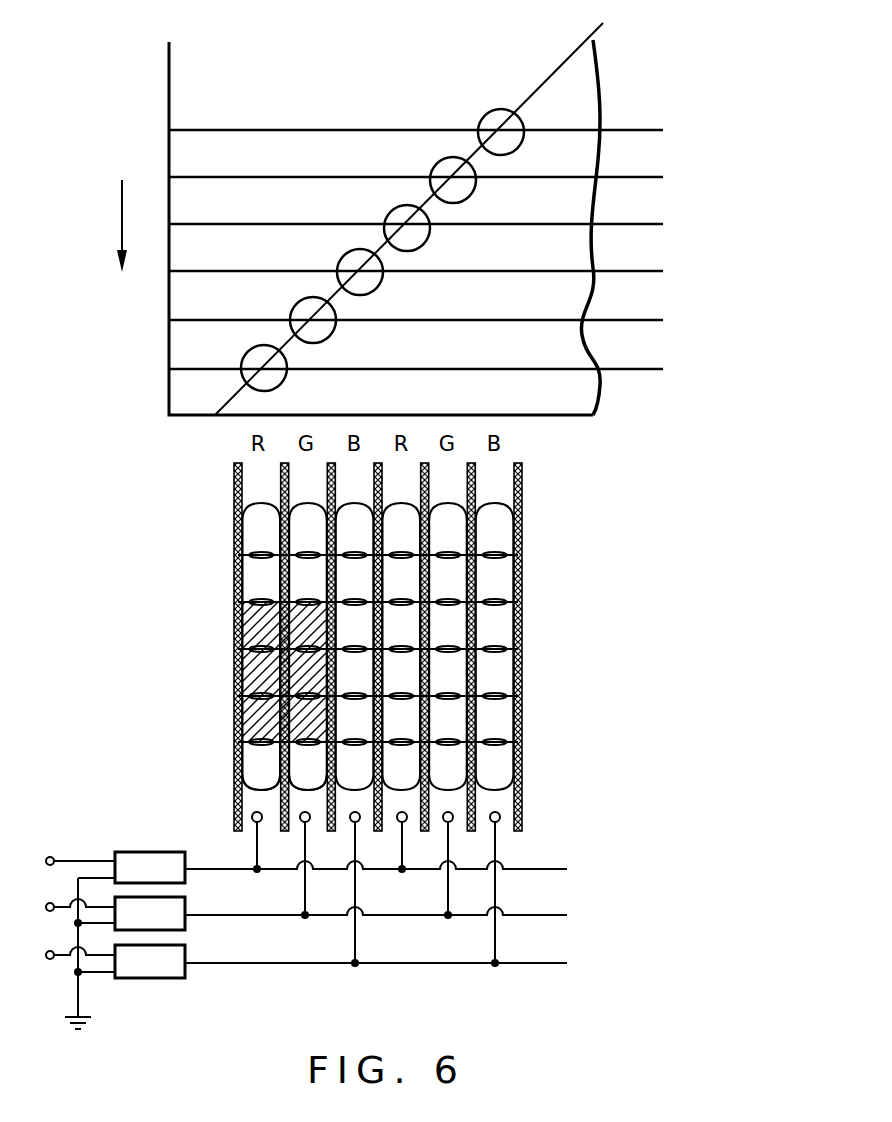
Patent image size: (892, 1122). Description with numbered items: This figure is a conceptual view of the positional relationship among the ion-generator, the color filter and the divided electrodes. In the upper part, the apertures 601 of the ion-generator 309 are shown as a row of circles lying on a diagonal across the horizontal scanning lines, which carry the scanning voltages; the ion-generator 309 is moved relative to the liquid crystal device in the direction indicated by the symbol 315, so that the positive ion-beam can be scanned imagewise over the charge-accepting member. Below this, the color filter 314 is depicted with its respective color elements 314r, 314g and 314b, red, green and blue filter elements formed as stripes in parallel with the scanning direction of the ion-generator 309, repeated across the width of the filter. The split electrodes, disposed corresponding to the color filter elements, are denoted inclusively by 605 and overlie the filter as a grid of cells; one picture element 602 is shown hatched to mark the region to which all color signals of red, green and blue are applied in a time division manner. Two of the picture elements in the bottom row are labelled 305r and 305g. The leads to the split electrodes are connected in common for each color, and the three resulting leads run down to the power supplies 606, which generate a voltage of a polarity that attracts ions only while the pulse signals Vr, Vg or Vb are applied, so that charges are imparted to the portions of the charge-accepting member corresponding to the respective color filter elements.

The apertures 601 is at (502, 109).
The ion-generator 309 is at (703, 53).
The direction of movement of the ion-generator 315 is at (122, 205).
The red color element 314r is at (257, 469).
The green color element 314g is at (303, 473).
The blue color element 314b is at (355, 492).
The split electrodes 605 is at (326, 647).
The color filter 314 is at (182, 627).
The picture element 602 is at (236, 718).
The red picture element 305r is at (248, 796).
The green picture element 305g is at (307, 798).
The power supplies 606 is at (152, 862).